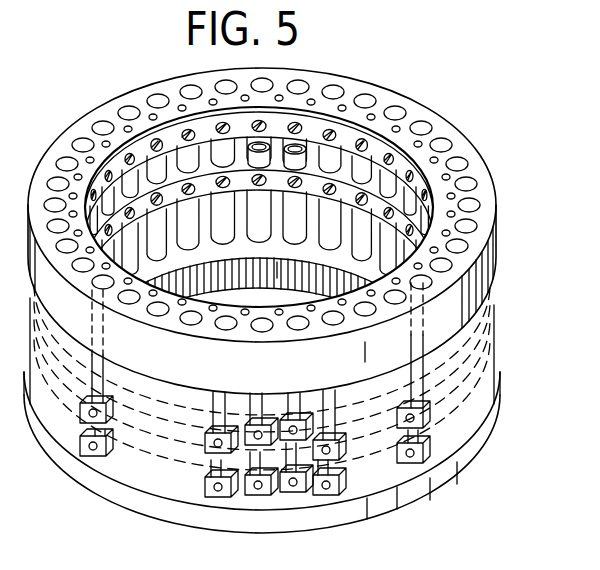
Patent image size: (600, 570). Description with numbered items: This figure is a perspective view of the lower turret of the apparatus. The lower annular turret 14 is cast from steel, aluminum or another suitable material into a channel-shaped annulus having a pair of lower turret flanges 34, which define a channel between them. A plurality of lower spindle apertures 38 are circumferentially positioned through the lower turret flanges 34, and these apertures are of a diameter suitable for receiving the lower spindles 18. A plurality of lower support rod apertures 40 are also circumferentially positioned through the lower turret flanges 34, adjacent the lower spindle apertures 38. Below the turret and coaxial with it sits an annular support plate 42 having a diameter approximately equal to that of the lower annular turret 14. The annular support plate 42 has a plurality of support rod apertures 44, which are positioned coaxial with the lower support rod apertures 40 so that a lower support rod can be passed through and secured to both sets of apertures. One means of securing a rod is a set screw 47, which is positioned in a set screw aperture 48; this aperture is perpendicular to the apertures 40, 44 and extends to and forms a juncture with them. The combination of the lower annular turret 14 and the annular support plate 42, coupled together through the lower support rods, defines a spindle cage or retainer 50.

The lower annular turret 14 is at (499, 183).
The lower spindles 18 is at (336, 404).
The lower turret flanges 34 is at (200, 186).
The lower spindle apertures 38 is at (365, 104).
The lower support rod apertures 40 is at (400, 281).
The annular support plate 42 is at (458, 465).
The support rod apertures 44 is at (385, 162).
The set screw 47 is at (260, 190).
The set screw aperture 48 is at (294, 190).
The spindle cage 50 is at (192, 409).